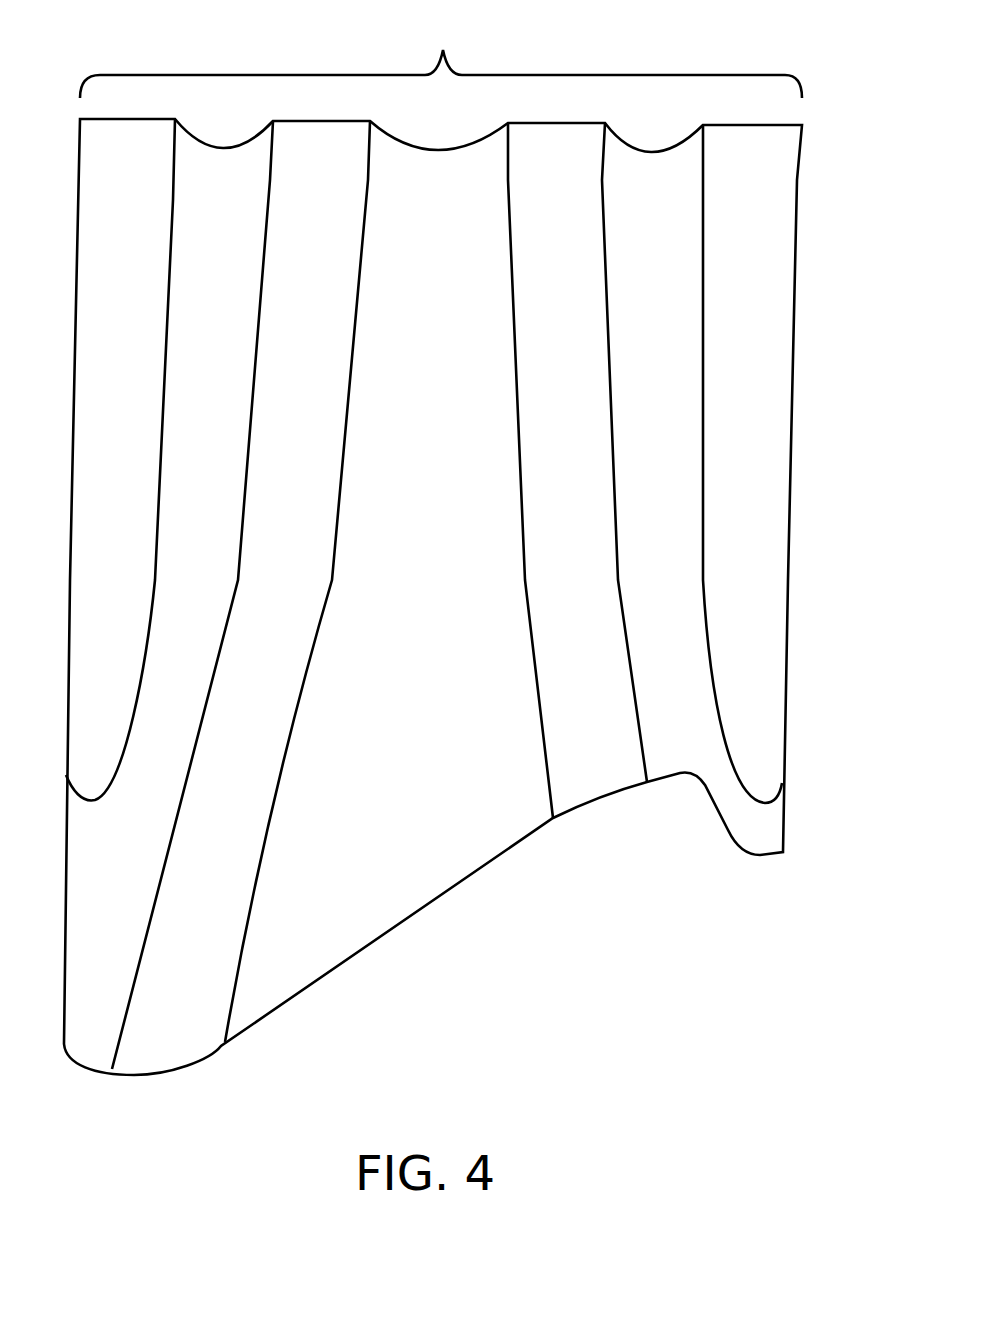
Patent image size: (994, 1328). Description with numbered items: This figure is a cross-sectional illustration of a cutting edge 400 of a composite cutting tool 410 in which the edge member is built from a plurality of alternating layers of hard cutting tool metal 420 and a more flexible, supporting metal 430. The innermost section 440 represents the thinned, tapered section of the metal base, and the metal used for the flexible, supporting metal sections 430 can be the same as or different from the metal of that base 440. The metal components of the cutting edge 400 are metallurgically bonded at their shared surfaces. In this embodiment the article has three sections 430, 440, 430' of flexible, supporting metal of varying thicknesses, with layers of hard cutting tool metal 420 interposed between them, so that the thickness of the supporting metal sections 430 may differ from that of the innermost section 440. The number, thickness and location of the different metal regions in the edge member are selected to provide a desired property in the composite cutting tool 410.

The cutting edge 400 is at (443, 48).
The composite cutting tool 410 is at (812, 353).
The hard cutting tool metal 420 is at (141, 563).
The flexible, supporting metal 430 is at (147, 459).
The flexible, supporting metal section 430' is at (648, 452).
The innermost section 440 is at (461, 565).